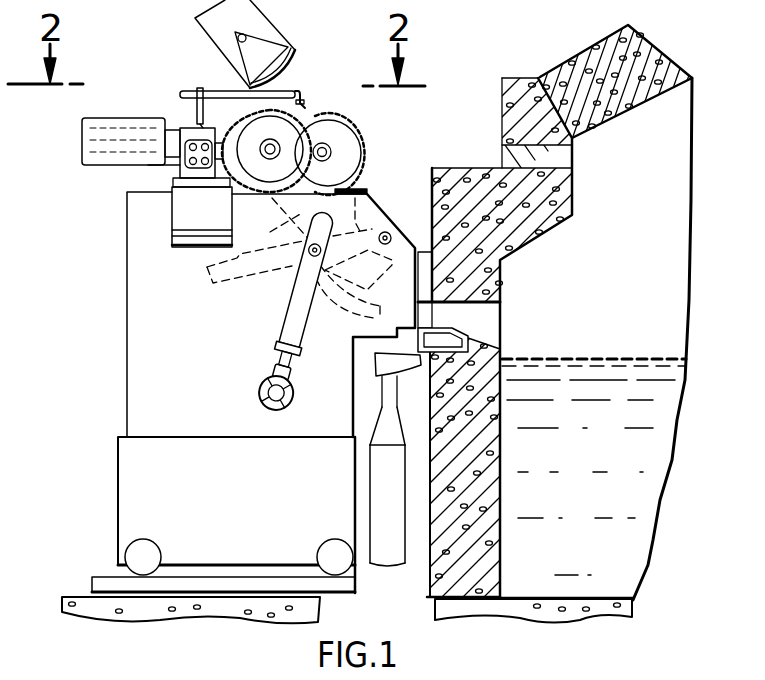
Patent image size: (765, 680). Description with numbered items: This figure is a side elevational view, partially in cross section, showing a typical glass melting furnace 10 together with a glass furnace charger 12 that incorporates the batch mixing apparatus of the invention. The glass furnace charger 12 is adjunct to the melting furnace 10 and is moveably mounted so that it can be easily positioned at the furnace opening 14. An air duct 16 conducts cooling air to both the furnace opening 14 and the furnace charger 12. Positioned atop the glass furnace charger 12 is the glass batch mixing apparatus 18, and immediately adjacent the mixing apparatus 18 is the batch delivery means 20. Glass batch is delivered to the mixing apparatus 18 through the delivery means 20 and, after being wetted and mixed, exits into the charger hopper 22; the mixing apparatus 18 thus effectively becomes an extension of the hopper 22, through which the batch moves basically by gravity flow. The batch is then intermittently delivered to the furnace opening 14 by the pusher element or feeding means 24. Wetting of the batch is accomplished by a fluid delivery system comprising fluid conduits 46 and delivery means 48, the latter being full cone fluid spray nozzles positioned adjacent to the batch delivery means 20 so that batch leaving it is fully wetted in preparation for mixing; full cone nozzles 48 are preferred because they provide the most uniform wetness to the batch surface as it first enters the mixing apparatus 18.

The glass melting furnace 10 is at (629, 245).
The glass furnace charger 12 is at (230, 416).
The furnace opening 14 is at (486, 316).
The air duct 16 is at (397, 548).
The glass batch mixing apparatus 18 is at (138, 183).
The batch delivery means 20 is at (267, 32).
The hopper 22 is at (276, 228).
The pusher element or feeding means 24 is at (340, 306).
The fluid conduits 46 is at (182, 95).
The delivery means 48 is at (306, 108).